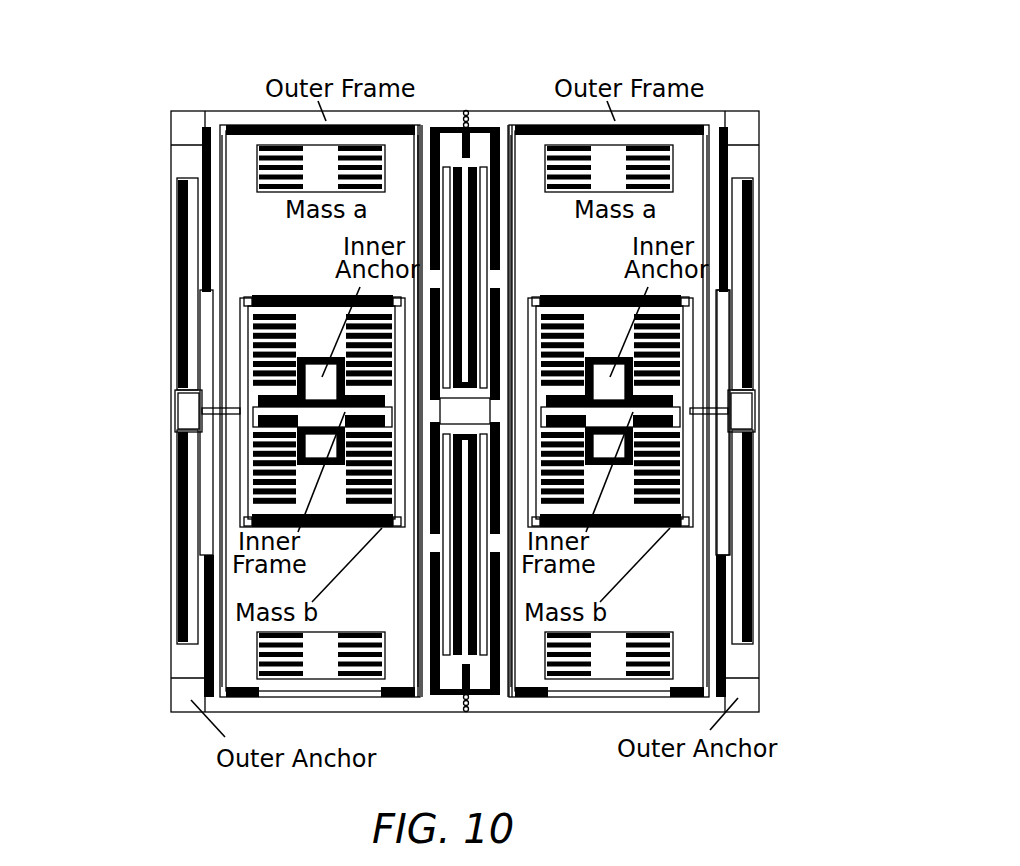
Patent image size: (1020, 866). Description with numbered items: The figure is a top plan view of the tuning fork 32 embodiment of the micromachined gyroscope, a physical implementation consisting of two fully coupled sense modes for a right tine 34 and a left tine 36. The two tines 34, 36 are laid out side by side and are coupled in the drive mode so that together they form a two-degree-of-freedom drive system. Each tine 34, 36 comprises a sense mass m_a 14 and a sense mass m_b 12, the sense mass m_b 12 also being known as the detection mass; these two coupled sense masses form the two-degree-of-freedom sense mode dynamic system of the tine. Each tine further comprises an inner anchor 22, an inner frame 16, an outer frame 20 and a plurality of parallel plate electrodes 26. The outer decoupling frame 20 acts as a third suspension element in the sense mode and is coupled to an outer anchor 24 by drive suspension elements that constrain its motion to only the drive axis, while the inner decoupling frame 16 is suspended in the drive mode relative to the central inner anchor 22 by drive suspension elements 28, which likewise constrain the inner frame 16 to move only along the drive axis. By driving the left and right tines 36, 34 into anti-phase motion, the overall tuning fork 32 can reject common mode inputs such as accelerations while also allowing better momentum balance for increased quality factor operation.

The sense mass m_b 12 is at (250, 518).
The sense mass m_a 14 is at (290, 232).
The inner decoupling frame 16 is at (265, 428).
The outer decoupling frame 20 is at (420, 120).
The inner anchor 22 is at (280, 374).
The outer anchor 24 is at (178, 125).
The parallel plate electrodes 26 is at (290, 157).
The drive suspension elements 28 is at (275, 298).
The tuning fork 32 is at (812, 160).
The right tine 34 is at (700, 618).
The left tine 36 is at (266, 586).